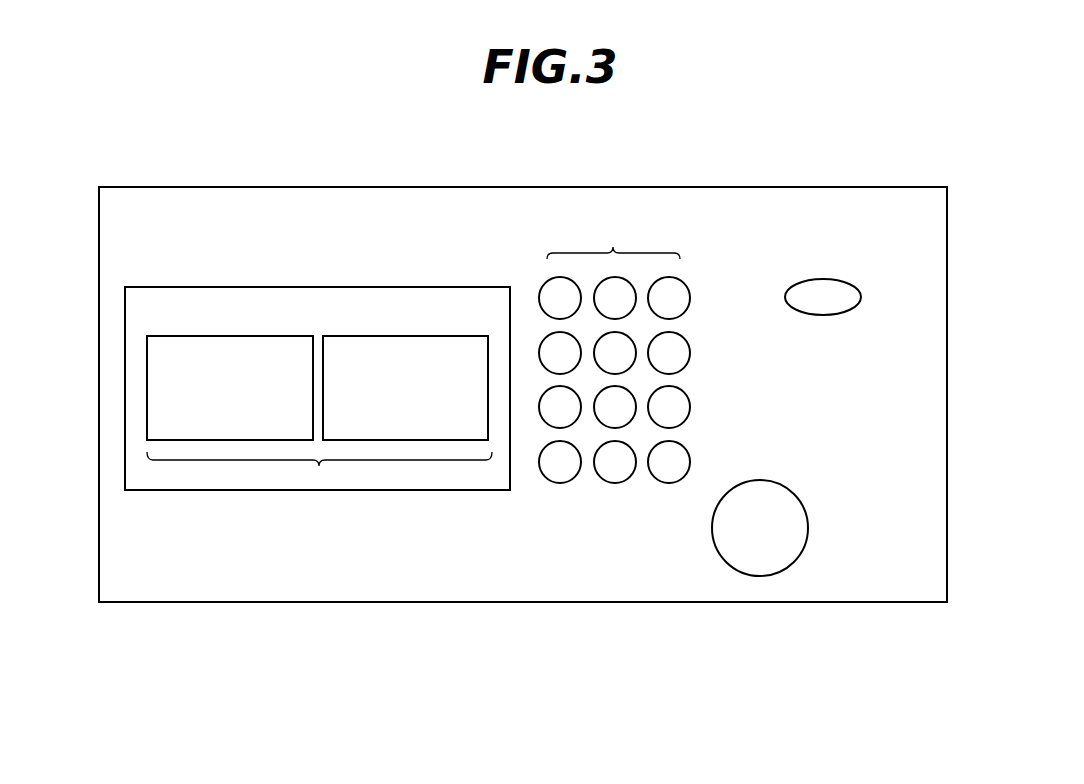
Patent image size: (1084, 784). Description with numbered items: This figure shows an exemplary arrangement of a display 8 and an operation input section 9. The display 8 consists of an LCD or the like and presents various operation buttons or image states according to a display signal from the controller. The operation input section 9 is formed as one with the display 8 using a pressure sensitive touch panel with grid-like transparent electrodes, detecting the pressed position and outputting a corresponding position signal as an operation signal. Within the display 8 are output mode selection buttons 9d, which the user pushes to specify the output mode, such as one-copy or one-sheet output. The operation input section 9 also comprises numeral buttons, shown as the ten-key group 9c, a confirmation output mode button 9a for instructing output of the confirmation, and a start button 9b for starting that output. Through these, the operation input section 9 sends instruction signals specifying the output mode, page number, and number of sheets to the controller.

The display 8 is at (273, 287).
The operation input section 9 is at (647, 603).
The confirmation output mode button 9a is at (833, 282).
The start button 9b is at (807, 545).
The ten-key pad 9c is at (613, 250).
The output mode selection buttons 9d is at (319, 466).